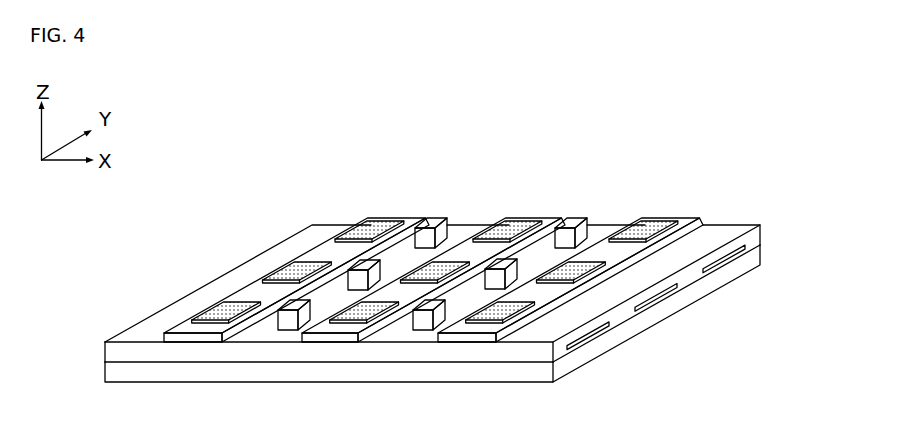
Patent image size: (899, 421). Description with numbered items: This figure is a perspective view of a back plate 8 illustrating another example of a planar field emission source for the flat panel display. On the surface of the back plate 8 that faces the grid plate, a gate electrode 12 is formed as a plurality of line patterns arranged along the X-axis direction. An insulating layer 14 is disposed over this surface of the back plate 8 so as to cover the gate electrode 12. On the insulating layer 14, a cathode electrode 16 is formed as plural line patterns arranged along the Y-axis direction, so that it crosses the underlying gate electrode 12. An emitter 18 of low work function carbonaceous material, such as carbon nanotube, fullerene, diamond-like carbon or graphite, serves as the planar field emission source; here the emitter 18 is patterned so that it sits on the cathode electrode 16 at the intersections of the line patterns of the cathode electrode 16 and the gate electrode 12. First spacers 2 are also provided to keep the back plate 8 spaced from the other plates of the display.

The first spacer 2 is at (403, 316).
The back plate 8 is at (432, 313).
The gate electrode 12 is at (656, 330).
The insulating layer 14 is at (439, 265).
The cathode electrode 16 is at (318, 248).
The emitter 18 is at (435, 251).